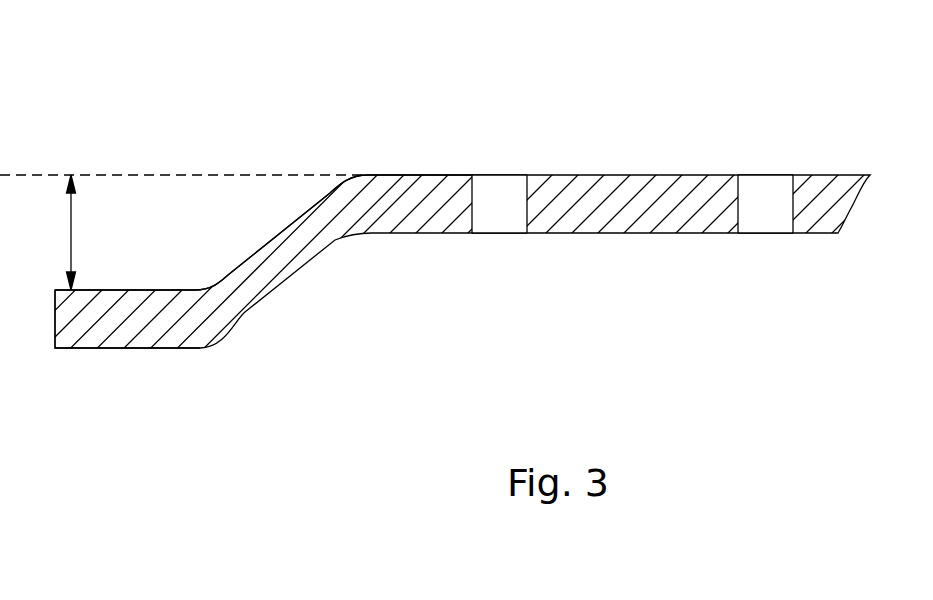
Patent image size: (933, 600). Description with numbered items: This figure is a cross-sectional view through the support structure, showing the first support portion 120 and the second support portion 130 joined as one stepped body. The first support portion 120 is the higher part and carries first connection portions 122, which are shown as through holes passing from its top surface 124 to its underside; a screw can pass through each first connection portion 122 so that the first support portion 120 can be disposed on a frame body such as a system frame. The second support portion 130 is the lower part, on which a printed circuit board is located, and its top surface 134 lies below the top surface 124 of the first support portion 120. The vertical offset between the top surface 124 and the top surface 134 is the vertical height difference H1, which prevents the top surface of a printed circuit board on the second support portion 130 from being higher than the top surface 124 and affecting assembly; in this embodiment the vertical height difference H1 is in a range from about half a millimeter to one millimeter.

The first support portion 120 is at (645, 175).
The first connection portion 122 is at (498, 233).
The top surface 124 is at (428, 175).
The second support portion 130 is at (143, 330).
The top surface 134 is at (162, 290).
The vertical height difference H1 is at (91, 232).